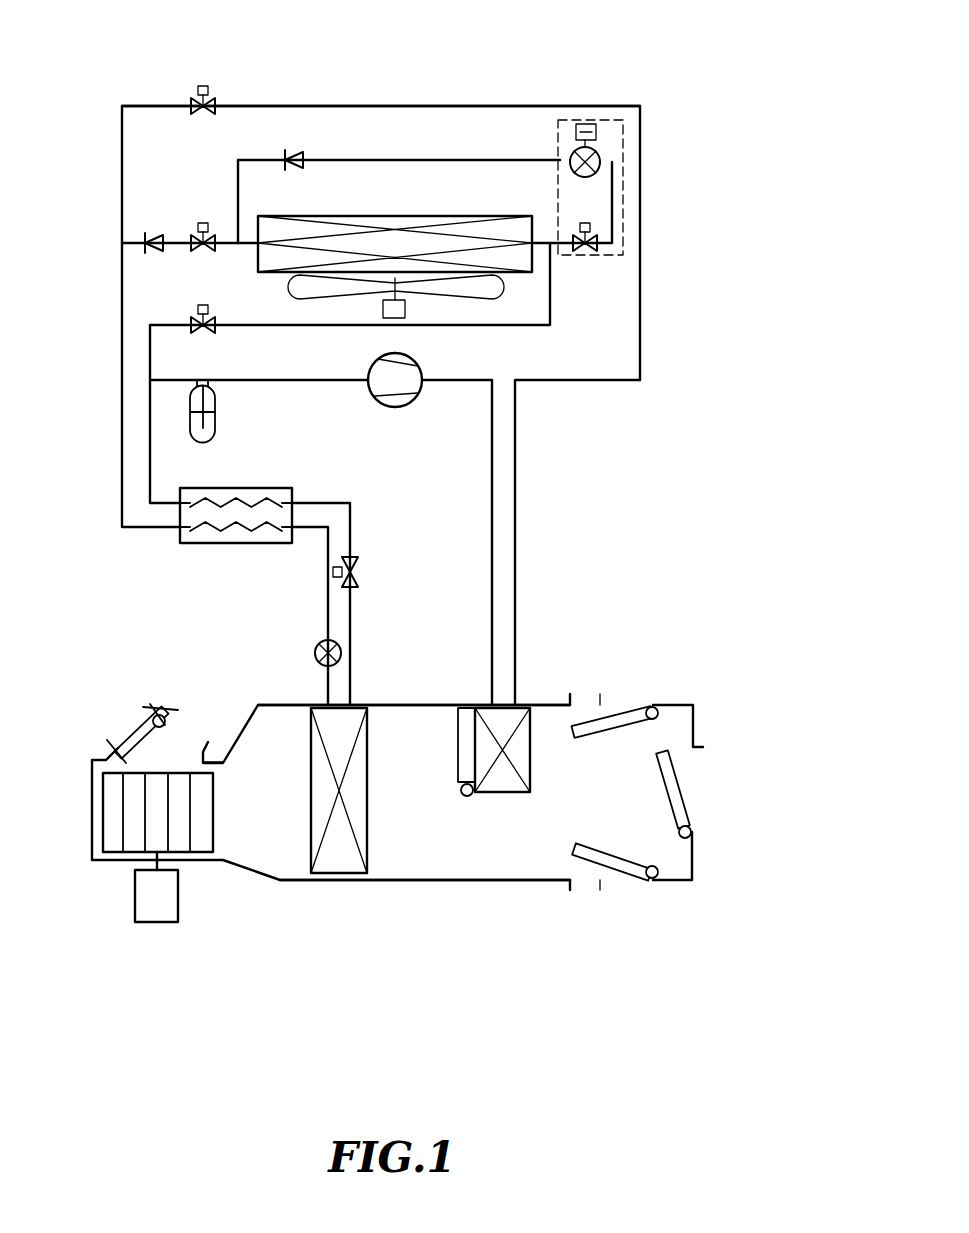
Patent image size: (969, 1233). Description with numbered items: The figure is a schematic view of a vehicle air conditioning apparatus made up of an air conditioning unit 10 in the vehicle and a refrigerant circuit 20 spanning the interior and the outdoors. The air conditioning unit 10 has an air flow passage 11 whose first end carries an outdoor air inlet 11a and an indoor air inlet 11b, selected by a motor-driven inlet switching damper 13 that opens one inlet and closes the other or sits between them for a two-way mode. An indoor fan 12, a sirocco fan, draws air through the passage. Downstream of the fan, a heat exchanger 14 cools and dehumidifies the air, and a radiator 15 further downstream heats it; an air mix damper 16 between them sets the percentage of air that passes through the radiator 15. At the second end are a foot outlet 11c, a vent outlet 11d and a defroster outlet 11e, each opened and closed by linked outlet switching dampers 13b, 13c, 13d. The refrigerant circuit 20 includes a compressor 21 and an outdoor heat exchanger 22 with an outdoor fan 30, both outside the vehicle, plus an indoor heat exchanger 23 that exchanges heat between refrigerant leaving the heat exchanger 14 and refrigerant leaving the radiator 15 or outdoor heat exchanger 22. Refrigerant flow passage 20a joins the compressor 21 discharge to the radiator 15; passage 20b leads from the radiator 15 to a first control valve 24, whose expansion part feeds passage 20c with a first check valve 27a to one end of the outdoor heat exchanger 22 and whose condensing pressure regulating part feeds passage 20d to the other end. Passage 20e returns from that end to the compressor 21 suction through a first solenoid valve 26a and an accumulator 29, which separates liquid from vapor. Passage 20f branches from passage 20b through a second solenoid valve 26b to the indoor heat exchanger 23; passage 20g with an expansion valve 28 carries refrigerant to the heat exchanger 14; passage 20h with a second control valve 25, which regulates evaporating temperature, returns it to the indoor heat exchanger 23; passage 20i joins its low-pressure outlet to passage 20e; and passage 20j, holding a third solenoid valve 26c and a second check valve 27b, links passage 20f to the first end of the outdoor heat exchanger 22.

The air conditioning unit 10 is at (686, 702).
The air flow passage 11 is at (276, 810).
The outdoor air inlet 11a is at (121, 728).
The indoor air inlet 11b is at (203, 728).
The foot outlet 11c is at (613, 702).
The vent outlet 11d is at (700, 783).
The defroster outlet 11e is at (607, 884).
The indoor fan 12 is at (108, 854).
The inlet switching damper 13 is at (152, 708).
The outlet switching damper 13b is at (636, 707).
The outlet switching damper 13c is at (690, 822).
The outlet switching damper 13d is at (640, 868).
The heat exchanger 14 is at (342, 873).
The radiator 15 is at (509, 800).
The air mix damper 16 is at (464, 800).
The refrigerant circuit 20 is at (470, 92).
The refrigerant flow passage 20a is at (492, 529).
The refrigerant flow passage 20b is at (515, 580).
The refrigerant flow passage 20c is at (392, 160).
The refrigerant flow passage 20d is at (532, 241).
The refrigerant flow passage 20e is at (150, 352).
The refrigerant flow passage 20f is at (122, 160).
The refrigerant flow passage 20g is at (327, 608).
The refrigerant flow passage 20h is at (352, 620).
The refrigerant flow passage 20i is at (150, 447).
The refrigerant flow passage 20j is at (168, 254).
The compressor 21 is at (390, 408).
The outdoor heat exchanger 22 is at (422, 216).
The indoor heat exchanger 23 is at (212, 543).
The first control valve 24 is at (604, 116).
The second control valve 25 is at (354, 560).
The first solenoid valve 26a is at (179, 311).
The second solenoid valve 26b is at (205, 86).
The third solenoid valve 26c is at (205, 223).
The first check valve 27a is at (290, 155).
The second check valve 27b is at (152, 232).
The expansion valve 28 is at (313, 650).
The accumulator 29 is at (212, 436).
The outdoor fan 30 is at (332, 298).